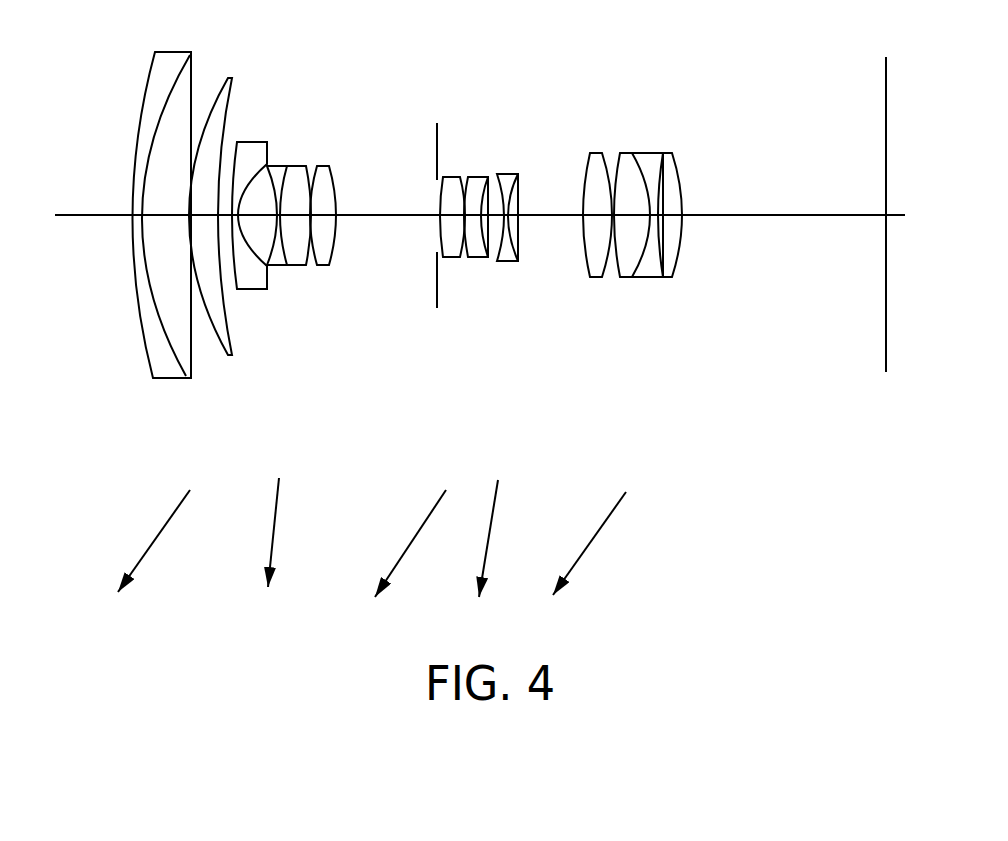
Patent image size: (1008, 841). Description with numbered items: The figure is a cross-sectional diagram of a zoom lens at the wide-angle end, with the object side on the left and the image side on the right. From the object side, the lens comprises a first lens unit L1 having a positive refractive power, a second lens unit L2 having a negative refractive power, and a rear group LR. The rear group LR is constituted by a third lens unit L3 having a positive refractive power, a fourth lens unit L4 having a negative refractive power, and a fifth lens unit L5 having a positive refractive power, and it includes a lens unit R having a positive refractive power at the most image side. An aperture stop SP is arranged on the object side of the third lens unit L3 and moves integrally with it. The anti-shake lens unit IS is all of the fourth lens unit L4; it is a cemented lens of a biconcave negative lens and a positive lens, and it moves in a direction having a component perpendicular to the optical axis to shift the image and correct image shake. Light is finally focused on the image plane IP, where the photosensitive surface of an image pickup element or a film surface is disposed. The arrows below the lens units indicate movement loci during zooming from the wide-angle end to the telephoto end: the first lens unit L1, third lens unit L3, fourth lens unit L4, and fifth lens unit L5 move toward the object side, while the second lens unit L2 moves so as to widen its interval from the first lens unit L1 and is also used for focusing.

The first lens unit L1 is at (147, 398).
The second lens unit L2 is at (237, 290).
The third lens unit L3 is at (427, 293).
The fourth lens unit L4 is at (491, 293).
The fifth lens unit L5 is at (580, 293).
The aperture stop SP is at (437, 138).
The rear group LR is at (435, 62).
The anti-shake lens unit IS is at (520, 147).
The lens unit R is at (580, 147).
The image plane IP is at (886, 138).